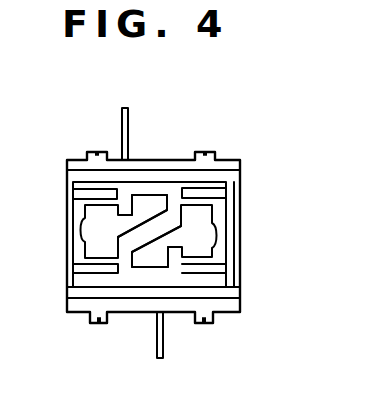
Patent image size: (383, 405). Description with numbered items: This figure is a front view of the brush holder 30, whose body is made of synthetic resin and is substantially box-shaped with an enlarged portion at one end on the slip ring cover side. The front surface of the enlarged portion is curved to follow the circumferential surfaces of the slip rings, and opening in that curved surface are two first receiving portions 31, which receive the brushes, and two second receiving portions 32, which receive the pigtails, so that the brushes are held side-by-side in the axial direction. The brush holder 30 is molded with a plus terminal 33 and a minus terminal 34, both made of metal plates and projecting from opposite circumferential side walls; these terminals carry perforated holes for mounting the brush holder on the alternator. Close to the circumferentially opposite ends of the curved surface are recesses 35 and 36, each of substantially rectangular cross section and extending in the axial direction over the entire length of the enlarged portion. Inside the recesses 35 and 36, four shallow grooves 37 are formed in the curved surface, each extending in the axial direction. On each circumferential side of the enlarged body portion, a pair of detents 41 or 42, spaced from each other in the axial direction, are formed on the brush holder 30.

The brush holder 30 is at (150, 230).
The first receiving portions 31 is at (100, 237).
The second receiving portions 32 is at (151, 203).
The plus terminal 33 is at (122, 128).
The minus terminal 34 is at (163, 346).
The recess 35 is at (80, 172).
The recess 36 is at (78, 290).
The shallow grooves 37 is at (83, 198).
The detents 41 is at (97, 152).
The detents 42 is at (98, 323).